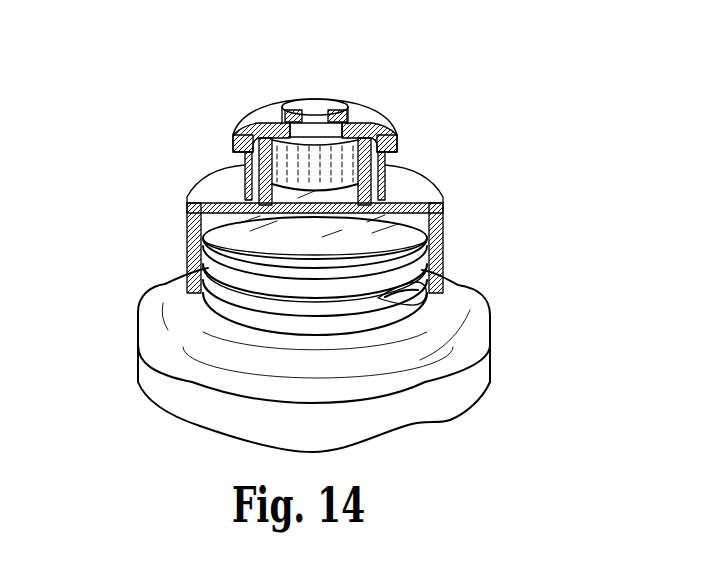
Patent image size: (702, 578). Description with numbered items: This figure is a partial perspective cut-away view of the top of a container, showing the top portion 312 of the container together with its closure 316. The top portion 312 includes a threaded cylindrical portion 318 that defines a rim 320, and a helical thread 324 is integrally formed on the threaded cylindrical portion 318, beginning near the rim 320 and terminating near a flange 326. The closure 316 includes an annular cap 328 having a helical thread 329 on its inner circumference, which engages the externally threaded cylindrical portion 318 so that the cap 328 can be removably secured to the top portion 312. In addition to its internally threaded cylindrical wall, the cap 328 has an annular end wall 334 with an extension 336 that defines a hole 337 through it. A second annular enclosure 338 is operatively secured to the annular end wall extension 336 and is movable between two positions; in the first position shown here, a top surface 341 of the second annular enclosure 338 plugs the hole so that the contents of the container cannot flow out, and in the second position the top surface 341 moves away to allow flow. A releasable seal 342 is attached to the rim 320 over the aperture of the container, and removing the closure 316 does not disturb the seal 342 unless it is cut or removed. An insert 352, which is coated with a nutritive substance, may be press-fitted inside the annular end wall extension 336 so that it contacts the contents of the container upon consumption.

The top portion 312 is at (158, 333).
The closure 316 is at (155, 108).
The threaded cylindrical portion 318 is at (412, 312).
The rim 320 is at (410, 238).
The helical thread 324 is at (362, 280).
The flange 326 is at (272, 323).
The annular cap 328 is at (442, 199).
The helical thread 329 is at (187, 270).
The annular end wall 334 is at (417, 188).
The extension 336 is at (390, 162).
The hole 337 is at (233, 140).
The second annular enclosure 338 is at (357, 112).
The top surface 341 is at (316, 110).
The releasable seal 342 is at (329, 227).
The insert 352 is at (246, 172).